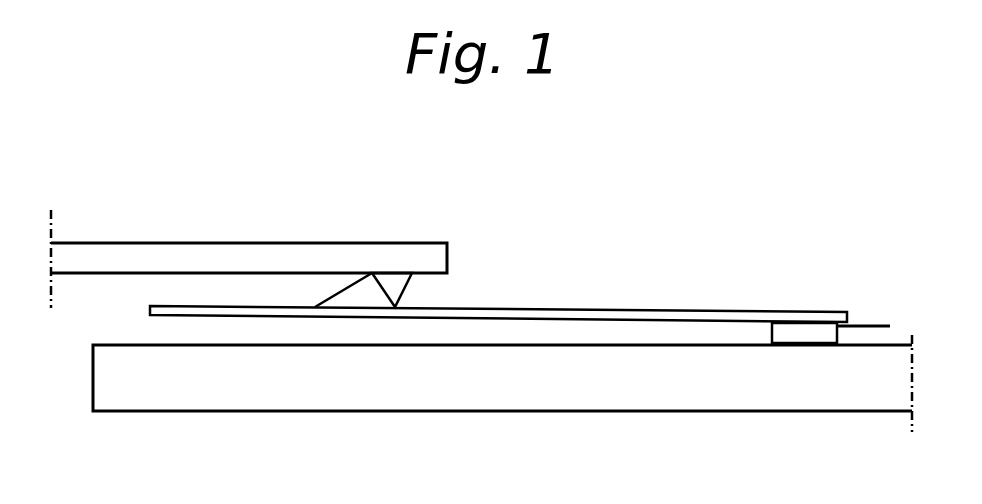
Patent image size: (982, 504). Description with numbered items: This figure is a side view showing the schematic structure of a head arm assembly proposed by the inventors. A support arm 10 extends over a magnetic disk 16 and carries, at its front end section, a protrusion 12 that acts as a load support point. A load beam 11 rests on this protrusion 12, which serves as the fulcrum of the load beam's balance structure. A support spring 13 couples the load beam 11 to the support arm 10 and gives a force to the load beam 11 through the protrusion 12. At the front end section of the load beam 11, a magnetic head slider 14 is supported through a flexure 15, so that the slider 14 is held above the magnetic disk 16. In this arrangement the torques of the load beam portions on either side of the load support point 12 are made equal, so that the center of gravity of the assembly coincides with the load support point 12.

The support arm 10 is at (220, 255).
The load beam 11 is at (537, 312).
The protrusion 12 is at (410, 285).
The support spring 13 is at (343, 290).
The magnetic head slider 14 is at (823, 335).
The flexure 15 is at (867, 326).
The magnetic disk 16 is at (727, 393).